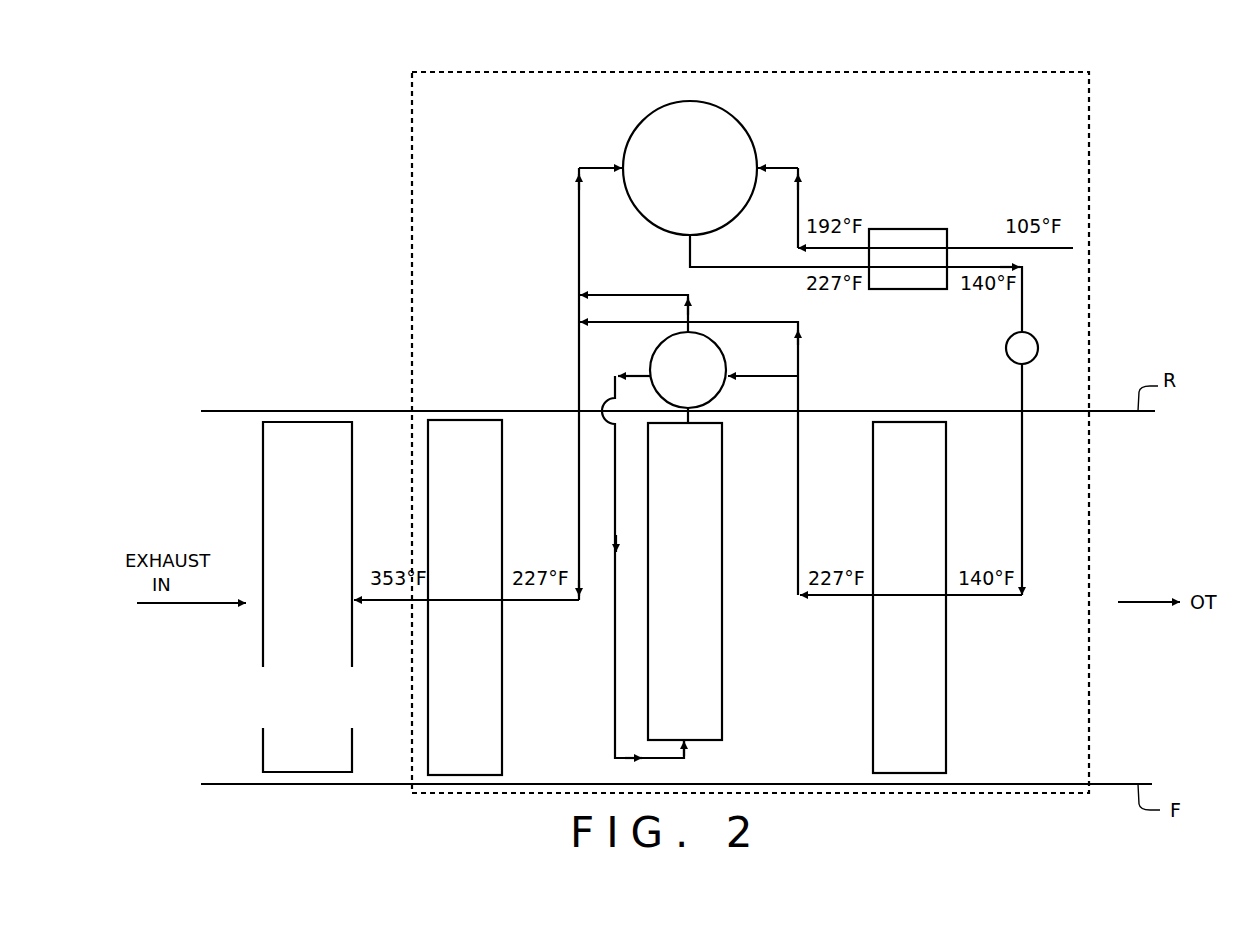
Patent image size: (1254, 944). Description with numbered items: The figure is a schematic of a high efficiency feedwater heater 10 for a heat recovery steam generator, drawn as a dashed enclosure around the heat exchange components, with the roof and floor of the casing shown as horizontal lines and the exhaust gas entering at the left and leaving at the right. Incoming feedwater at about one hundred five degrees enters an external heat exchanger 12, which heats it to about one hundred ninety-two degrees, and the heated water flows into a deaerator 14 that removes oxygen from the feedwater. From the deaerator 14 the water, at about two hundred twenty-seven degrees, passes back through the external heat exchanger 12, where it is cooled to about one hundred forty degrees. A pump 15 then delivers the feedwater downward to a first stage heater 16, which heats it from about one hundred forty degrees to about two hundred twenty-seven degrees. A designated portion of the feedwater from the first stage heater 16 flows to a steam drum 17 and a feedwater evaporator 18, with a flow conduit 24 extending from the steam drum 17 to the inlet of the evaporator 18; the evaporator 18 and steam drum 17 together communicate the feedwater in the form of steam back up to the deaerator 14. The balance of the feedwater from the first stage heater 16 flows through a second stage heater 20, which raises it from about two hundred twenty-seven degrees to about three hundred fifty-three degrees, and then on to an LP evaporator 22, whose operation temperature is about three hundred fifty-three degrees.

The high efficiency feedwater heater 10 is at (873, 71).
The external heat exchanger 12 is at (925, 229).
The deaerator 14 is at (737, 121).
The pump 15 is at (1006, 349).
The first stage heater 16 is at (903, 422).
The steam drum 17 is at (657, 349).
The feedwater evaporator 18 is at (723, 477).
The second stage heater 20 is at (467, 420).
The LP evaporator 22 is at (309, 422).
The flow conduit 24 is at (616, 675).